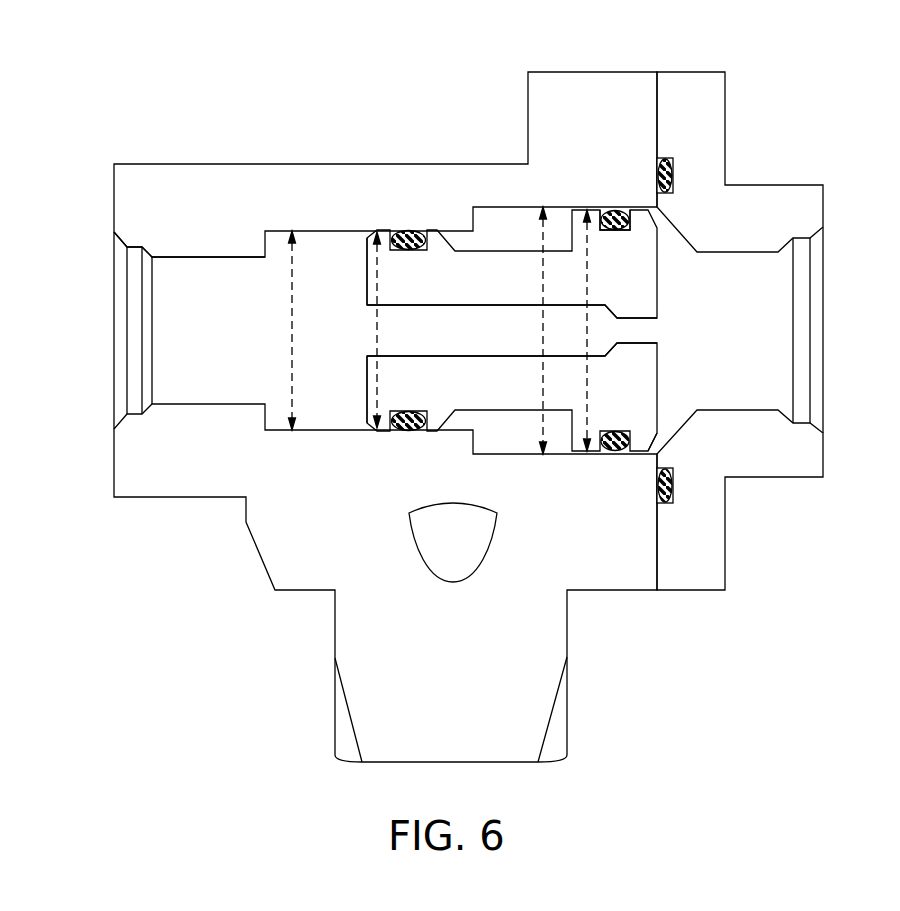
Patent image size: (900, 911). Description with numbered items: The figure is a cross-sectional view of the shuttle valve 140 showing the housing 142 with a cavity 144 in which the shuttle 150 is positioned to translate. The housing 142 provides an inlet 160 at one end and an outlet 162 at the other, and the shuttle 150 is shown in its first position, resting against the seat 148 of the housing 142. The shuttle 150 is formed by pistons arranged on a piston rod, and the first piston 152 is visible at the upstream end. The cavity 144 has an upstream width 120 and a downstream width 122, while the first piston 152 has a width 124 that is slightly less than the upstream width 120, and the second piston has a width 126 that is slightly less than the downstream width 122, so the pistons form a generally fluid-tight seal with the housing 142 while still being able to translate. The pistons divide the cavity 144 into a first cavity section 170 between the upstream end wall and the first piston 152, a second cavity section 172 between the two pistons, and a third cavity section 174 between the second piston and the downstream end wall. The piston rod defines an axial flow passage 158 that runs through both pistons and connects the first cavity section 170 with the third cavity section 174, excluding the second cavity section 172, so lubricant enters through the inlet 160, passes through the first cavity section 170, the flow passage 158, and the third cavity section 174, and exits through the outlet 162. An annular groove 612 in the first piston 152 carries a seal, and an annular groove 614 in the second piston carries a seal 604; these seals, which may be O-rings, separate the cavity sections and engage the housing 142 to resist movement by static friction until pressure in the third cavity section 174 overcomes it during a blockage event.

The shuttle valve 140 is at (254, 118).
The housing 142 is at (380, 183).
The cavity 144 is at (157, 387).
The second seat 148 is at (667, 430).
The shuttle 150 is at (433, 230).
The first piston 152 is at (368, 277).
The axial flow passage 158 is at (370, 332).
The inlet 160 is at (121, 328).
The outlet 162 is at (804, 332).
The first cavity section 170 is at (172, 290).
The second cavity section 172 is at (518, 420).
The third cavity section 174 is at (767, 262).
The upstream width 120 is at (291, 332).
The downstream width 122 is at (543, 246).
The width of first piston 124 is at (378, 380).
The width of second piston 126 is at (588, 278).
The seal 604 is at (614, 210).
The annular groove 612 is at (408, 251).
The annular groove 614 is at (612, 233).